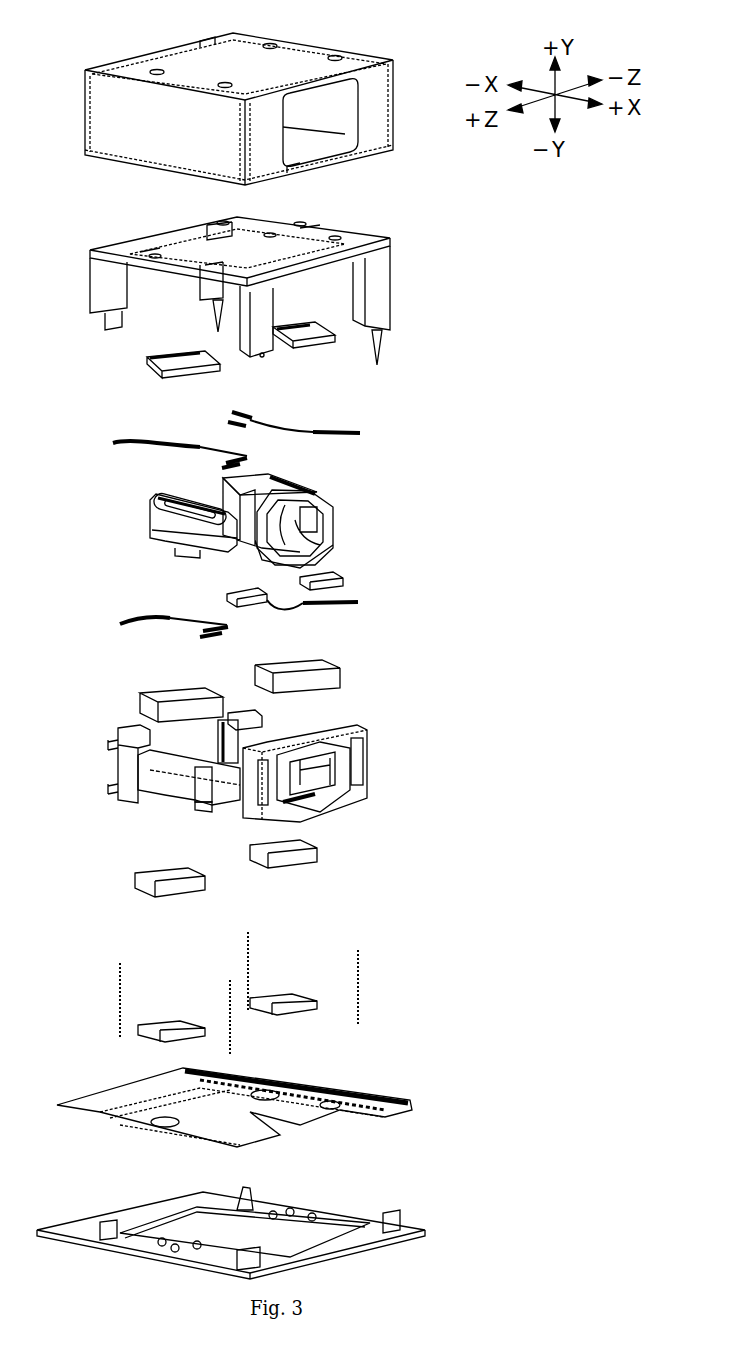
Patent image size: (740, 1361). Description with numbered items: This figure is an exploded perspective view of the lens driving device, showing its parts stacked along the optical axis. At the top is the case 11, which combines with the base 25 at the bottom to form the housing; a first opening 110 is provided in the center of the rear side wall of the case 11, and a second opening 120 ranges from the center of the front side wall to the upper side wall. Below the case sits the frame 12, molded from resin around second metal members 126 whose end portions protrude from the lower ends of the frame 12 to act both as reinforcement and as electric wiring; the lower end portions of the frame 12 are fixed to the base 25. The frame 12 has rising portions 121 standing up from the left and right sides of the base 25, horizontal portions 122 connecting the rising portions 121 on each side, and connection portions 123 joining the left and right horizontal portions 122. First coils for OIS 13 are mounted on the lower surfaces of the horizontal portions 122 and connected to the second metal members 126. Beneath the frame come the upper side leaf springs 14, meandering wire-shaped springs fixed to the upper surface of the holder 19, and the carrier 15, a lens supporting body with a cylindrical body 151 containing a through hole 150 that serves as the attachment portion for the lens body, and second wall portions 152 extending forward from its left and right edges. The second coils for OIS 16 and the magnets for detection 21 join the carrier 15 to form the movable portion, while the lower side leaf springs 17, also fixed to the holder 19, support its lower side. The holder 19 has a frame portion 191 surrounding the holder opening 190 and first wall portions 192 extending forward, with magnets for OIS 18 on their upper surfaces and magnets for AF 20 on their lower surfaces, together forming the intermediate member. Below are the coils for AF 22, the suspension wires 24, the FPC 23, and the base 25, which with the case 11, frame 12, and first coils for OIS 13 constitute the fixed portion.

The case 11 is at (366, 41).
The first opening 110 is at (352, 132).
The second opening 120 is at (148, 64).
The frame 12 is at (267, 298).
The rising portions 121 is at (105, 295).
The horizontal portions 122 is at (320, 233).
The connection portions 123 is at (200, 245).
The second metal members 126 is at (303, 346).
The first coils for OIS 13 is at (178, 366).
The upper side leaf springs 14 is at (195, 447).
The carrier 15 is at (258, 508).
The through hole 150 is at (302, 538).
The cylindrical body 151 is at (262, 480).
The second wall portions 152 is at (180, 533).
The second coils for OIS 16 is at (162, 497).
The lower side leaf springs 17 is at (195, 621).
The magnets for OIS 18 is at (148, 692).
The holder 19 is at (279, 757).
The holder opening 190 is at (333, 803).
The frame portion 191 is at (364, 753).
The first wall portions 192 is at (277, 719).
The magnets for AF 20 is at (290, 845).
The magnets for detection 21 is at (232, 595).
The coils for AF 22 is at (190, 1028).
The FPC 23 is at (413, 1092).
The suspension wires 24 is at (122, 965).
The base 25 is at (415, 1213).